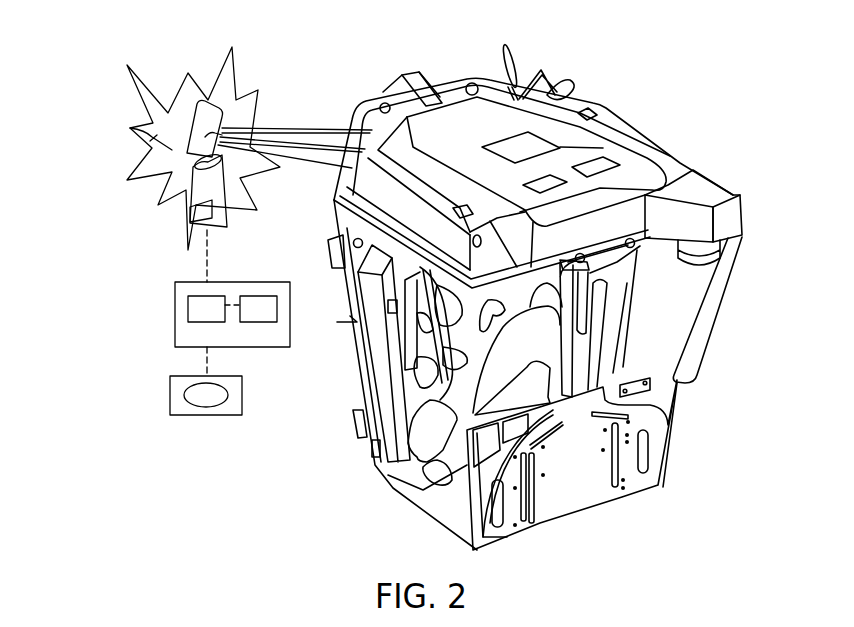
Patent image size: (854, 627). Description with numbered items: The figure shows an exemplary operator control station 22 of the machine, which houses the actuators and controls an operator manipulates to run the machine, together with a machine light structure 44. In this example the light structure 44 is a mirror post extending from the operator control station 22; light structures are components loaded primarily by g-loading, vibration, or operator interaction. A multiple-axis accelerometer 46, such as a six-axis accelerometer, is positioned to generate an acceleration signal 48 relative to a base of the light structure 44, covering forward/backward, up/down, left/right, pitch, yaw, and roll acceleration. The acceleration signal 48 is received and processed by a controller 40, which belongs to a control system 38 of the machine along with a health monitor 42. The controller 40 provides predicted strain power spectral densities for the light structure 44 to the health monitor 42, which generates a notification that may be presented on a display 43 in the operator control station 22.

The operator control station 22 is at (683, 78).
The control system 38 is at (175, 335).
The controller 40 is at (188, 309).
The health monitor 42 is at (260, 323).
The display 43 is at (187, 417).
The light structure 44 is at (130, 128).
The multiple-axis accelerometer 46 is at (192, 208).
The acceleration signal 48 is at (207, 268).